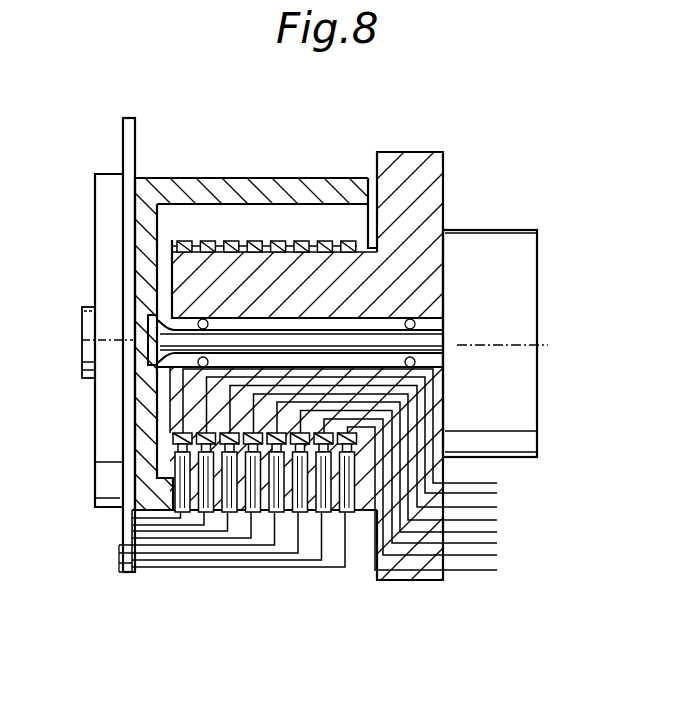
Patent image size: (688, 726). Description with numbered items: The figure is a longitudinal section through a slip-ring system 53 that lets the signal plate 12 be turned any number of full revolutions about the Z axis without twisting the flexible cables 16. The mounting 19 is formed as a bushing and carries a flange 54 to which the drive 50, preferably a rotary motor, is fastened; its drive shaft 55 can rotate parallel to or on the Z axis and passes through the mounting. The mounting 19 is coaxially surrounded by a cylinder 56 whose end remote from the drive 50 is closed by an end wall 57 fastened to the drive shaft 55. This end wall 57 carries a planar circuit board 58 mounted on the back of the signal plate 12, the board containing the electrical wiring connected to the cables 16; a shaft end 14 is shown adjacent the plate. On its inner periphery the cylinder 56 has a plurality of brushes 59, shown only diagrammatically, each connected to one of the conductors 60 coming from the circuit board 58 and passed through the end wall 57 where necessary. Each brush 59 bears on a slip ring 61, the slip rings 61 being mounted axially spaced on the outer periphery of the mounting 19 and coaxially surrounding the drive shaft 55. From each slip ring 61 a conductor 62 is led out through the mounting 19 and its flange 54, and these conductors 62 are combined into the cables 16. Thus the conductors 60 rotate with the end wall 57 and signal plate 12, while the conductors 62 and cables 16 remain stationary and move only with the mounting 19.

The signal plate 12 is at (100, 262).
The shaft coupling end 14 is at (90, 333).
The flexible cables 16 is at (478, 543).
The mounting 19 is at (337, 262).
The drive 50 is at (522, 418).
The slip-ring system 53 is at (268, 160).
The flange 54 is at (440, 203).
The drive shaft 55 is at (437, 343).
The cylinder 56 is at (360, 508).
The end wall 57 is at (138, 480).
The circuit board 58 is at (122, 126).
The brushes 59 is at (207, 510).
The conductors 60 is at (168, 565).
The slip rings 61 is at (252, 247).
The conductors 62 is at (205, 417).